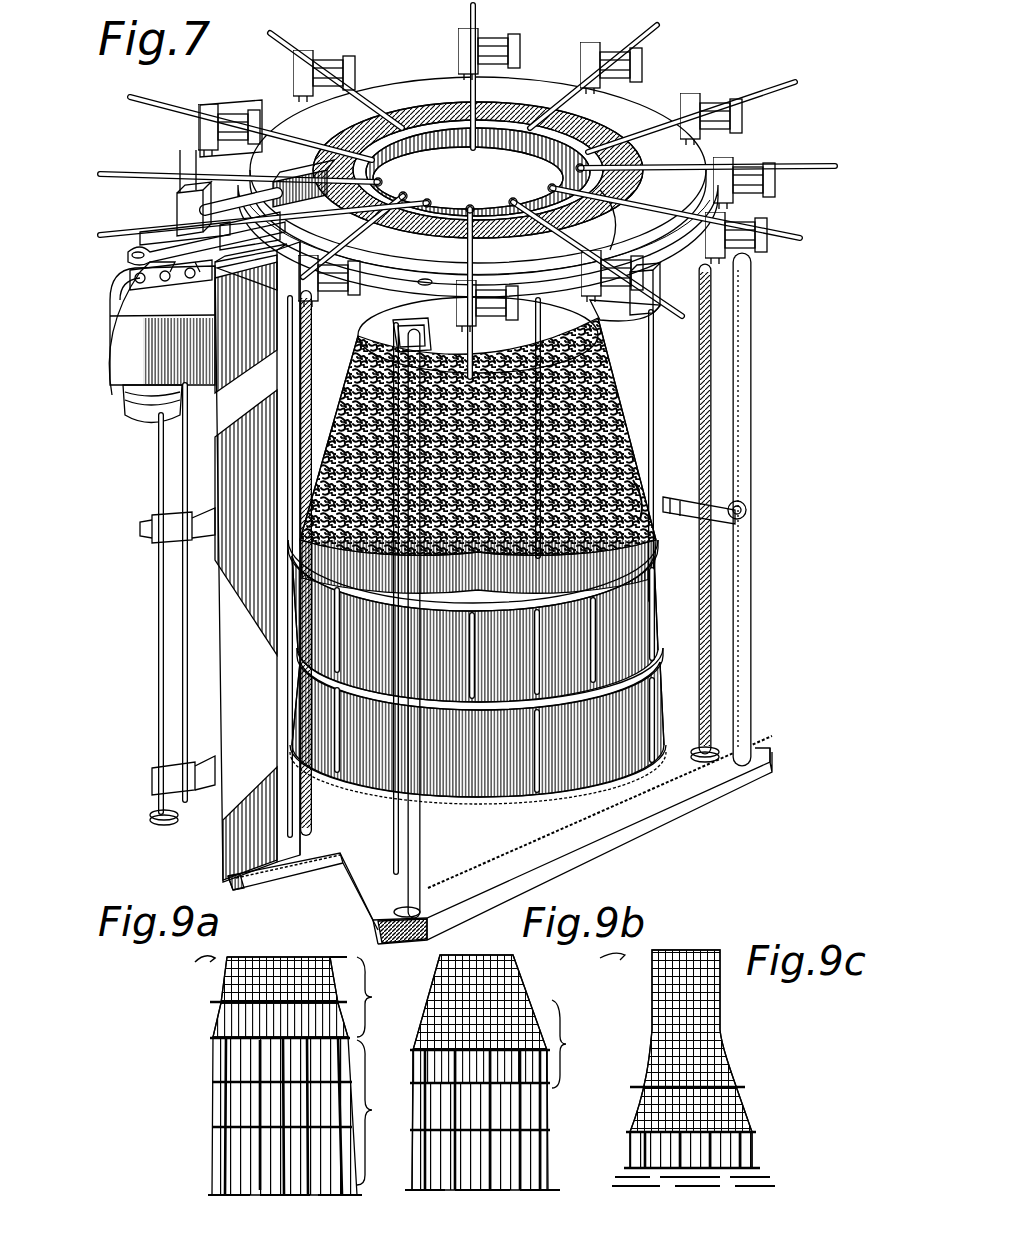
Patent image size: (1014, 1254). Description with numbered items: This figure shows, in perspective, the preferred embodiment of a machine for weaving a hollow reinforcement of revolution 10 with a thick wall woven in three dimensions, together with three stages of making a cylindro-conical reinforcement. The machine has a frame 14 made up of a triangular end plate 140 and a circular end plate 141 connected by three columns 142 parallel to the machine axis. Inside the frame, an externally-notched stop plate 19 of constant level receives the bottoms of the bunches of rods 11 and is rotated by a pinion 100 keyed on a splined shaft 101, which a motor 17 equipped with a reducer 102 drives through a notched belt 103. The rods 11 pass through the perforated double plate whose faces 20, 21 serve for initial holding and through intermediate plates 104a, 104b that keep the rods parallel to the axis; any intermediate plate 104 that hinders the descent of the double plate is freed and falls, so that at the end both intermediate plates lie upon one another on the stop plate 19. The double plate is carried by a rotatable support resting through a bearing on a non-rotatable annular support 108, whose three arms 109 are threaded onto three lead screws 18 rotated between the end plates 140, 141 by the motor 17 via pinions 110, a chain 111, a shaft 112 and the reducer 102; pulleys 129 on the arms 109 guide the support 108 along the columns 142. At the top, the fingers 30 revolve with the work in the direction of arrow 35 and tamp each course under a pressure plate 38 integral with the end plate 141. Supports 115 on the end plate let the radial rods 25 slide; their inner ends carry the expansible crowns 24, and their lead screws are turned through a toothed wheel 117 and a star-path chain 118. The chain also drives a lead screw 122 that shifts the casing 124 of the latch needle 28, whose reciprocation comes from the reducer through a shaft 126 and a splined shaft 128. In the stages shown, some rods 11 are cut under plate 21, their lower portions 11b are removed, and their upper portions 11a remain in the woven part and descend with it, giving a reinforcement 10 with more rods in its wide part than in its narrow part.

In FIG. 7, the hollow reinforcement of revolution 10 is at (600, 432).
In FIG. 9A, the hollow reinforcement of revolution 10 is at (232, 998).
In FIG. 9C, the hollow reinforcement of revolution 10 is at (722, 1016).
In FIG. 7, the rods 11 is at (606, 722).
In FIG. 9A, the rods 11 is at (218, 1158).
In FIG. 9A, the upper portions of the cut rods 11a is at (312, 997).
In FIG. 9B, the upper portions of the cut rods 11a is at (508, 1021).
In FIG. 9A, the lower portions of the cut rods 11b is at (312, 1116).
In FIG. 7, the frame 14 is at (636, 836).
In FIG. 7, the motor 17 is at (157, 425).
In FIG. 7, the threaded rods 18 is at (308, 388).
In FIG. 7, the stop plate 19 is at (486, 796).
In FIG. 9A, the stop plate 19 is at (215, 1192).
In FIG. 9B, the stop plate 19 is at (552, 1188).
In FIG. 7, the upper face of double plate 20 is at (640, 502).
In FIG. 9A, the upper face of double plate 20 is at (215, 1003).
In FIG. 9C, the upper face of double plate 20 is at (752, 1100).
In FIG. 9A, the lower face of double plate 21 is at (212, 1037).
In FIG. 9C, the lower face of double plate 21 is at (756, 1130).
In FIG. 7, the crowns 24 is at (498, 82).
In FIG. 7, the radial rods 25 is at (480, 12).
In FIG. 7, the latch needle 28 is at (384, 190).
In FIG. 9A, the latch needle 28 is at (198, 964).
In FIG. 9B, the latch needle 28 is at (605, 962).
In FIG. 7, the fingers 30 is at (500, 232).
In FIG. 7, the arrow 35 is at (592, 500).
In FIG. 7, the pressure plate 38 is at (404, 90).
In FIG. 7, the pinion 100 is at (280, 738).
In FIG. 7, the splined shaft 101 is at (288, 652).
In FIG. 7, the reducer 102 is at (188, 362).
In FIG. 7, the notched belt 103 is at (148, 250).
In FIG. 7, the intermediate plate 104 is at (690, 597).
In FIG. 9A, the intermediate plate 104a is at (215, 1083).
In FIG. 9B, the intermediate plate 104a is at (552, 1085).
In FIG. 9C, the intermediate plate 104a is at (760, 1168).
In FIG. 9A, the intermediate plate 104b is at (213, 1128).
In FIG. 9B, the intermediate plate 104b is at (552, 1131).
In FIG. 9C, the intermediate plate 104b is at (770, 1182).
In FIG. 7, the support 108 is at (690, 540).
In FIG. 7, the arms 109 is at (128, 398).
In FIG. 7, the pinions 110 is at (153, 818).
In FIG. 7, the chain 111 is at (514, 840).
In FIG. 7, the shaft 112 is at (150, 528).
In FIG. 7, the supports 115 is at (580, 72).
In FIG. 7, the toothed wheel 117 is at (654, 318).
In FIG. 7, the chain 118 is at (192, 318).
In FIG. 7, the lead screw 122 is at (180, 210).
In FIG. 7, the casing 124 is at (298, 185).
In FIG. 7, the shaft 126 is at (165, 232).
In FIG. 7, the splined shaft 128 is at (215, 168).
In FIG. 7, the pulleys 129 is at (748, 502).
In FIG. 7, the end plate 140 is at (690, 812).
In FIG. 7, the end plate 141 is at (646, 246).
In FIG. 7, the columns 142 is at (752, 348).